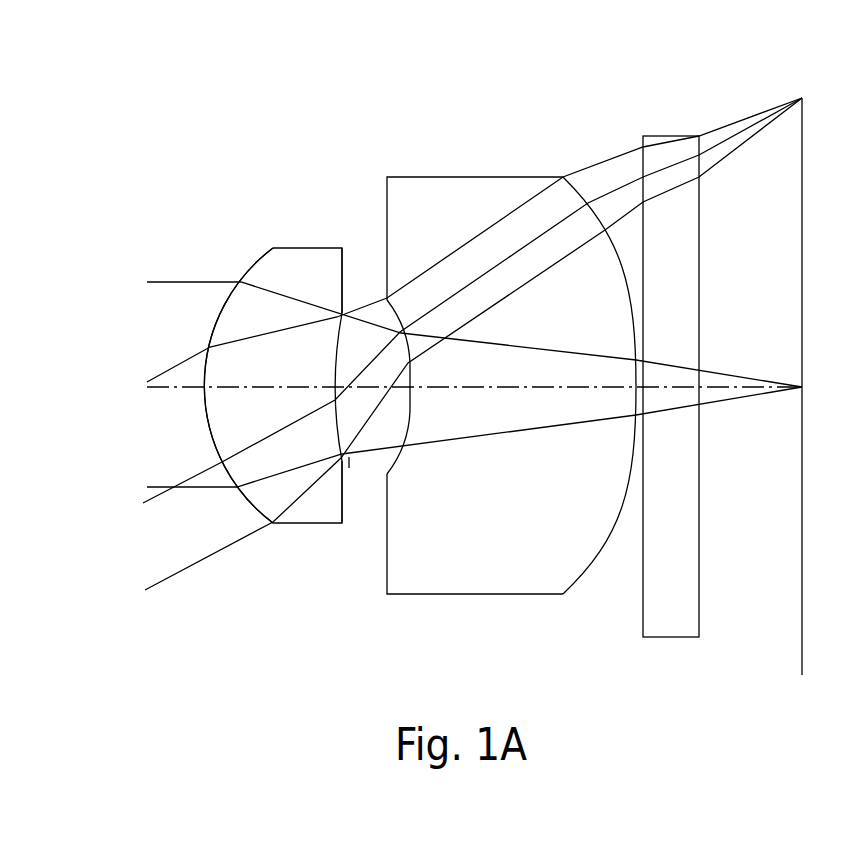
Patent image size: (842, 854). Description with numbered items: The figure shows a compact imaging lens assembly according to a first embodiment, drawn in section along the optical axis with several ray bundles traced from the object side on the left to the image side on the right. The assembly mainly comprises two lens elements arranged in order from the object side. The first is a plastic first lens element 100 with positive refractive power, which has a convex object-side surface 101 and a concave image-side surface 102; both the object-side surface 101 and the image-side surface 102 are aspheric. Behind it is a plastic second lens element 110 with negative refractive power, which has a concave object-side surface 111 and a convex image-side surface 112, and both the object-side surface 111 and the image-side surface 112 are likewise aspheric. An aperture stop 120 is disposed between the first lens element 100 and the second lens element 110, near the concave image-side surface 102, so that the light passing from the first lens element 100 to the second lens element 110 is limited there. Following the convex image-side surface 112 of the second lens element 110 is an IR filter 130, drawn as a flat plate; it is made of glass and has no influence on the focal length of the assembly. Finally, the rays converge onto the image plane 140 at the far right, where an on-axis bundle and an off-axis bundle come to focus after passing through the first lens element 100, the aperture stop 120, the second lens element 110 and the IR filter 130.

The first lens element 100 is at (208, 368).
The object-side surface 101 is at (203, 412).
The image-side surface 102 is at (335, 410).
The second lens element 110 is at (500, 369).
The object-side surface 111 is at (409, 407).
The image-side surface 112 is at (633, 400).
The aperture stop 120 is at (350, 314).
The IR filter 130 is at (685, 230).
The image plane 140 is at (800, 167).